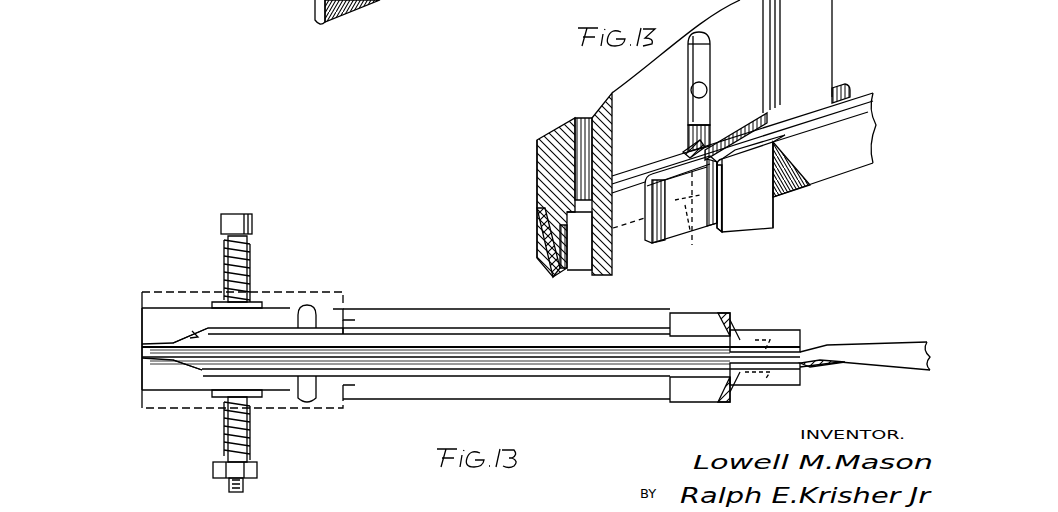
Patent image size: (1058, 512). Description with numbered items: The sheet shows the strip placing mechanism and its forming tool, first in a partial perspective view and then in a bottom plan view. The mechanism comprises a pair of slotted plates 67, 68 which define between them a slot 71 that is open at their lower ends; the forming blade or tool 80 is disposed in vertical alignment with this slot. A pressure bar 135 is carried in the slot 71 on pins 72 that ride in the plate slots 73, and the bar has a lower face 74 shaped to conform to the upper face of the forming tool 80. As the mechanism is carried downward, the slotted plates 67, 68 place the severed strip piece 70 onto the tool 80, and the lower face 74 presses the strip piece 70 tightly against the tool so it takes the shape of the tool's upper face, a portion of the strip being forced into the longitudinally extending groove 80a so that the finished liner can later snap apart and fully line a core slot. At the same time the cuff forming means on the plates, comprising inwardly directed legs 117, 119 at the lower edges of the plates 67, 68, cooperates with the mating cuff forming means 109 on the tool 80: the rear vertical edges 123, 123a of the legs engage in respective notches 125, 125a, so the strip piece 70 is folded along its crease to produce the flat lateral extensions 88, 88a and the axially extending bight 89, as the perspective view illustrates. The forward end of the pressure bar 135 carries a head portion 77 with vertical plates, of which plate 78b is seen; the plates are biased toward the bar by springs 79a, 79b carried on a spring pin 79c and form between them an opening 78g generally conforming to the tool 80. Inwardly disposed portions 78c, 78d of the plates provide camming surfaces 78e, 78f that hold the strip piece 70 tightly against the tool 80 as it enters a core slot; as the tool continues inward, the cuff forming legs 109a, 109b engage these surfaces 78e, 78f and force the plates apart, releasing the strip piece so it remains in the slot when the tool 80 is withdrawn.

In FIG. 13, the slotted plate 67 is at (538, 392).
In FIG. 12, the slotted plate 68 is at (602, 116).
In FIG. 13, the slotted plate 68 is at (507, 313).
In FIG. 12, the strip piece 70 is at (538, 240).
In FIG. 13, the slot 71 is at (445, 331).
In FIG. 12, the pins 72 is at (704, 93).
In FIG. 13, the pins 72 is at (307, 400).
In FIG. 12, the plate slots 73 is at (705, 50).
In FIG. 13, the lower face 74 is at (266, 347).
In FIG. 13, the head portion 77 is at (133, 298).
In FIG. 13, the vertical plate 78b is at (155, 318).
In FIG. 13, the inwardly disposed portion 78c is at (141, 328).
In FIG. 13, the inwardly disposed portion 78d is at (142, 372).
In FIG. 13, the camming surface 78e is at (195, 333).
In FIG. 13, the camming surface 78f is at (206, 375).
In FIG. 13, the opening 78g is at (142, 357).
In FIG. 13, the spring 79a is at (252, 264).
In FIG. 13, the spring 79b is at (246, 448).
In FIG. 13, the spring pin 79c is at (253, 223).
In FIG. 12, the forming tool 80 is at (842, 158).
In FIG. 13, the forming tool 80 is at (558, 350).
In FIG. 12, the longitudinally extending groove 80a is at (850, 90).
In FIG. 12, the lateral extension 88 is at (712, 228).
In FIG. 12, the lateral extension 88a is at (686, 220).
In FIG. 12, the bight 89 is at (703, 137).
In FIG. 12, the cuff forming means 109 is at (785, 201).
In FIG. 13, the cuff forming means 109 is at (800, 390).
In FIG. 12, the cuff forming leg 109a is at (755, 207).
In FIG. 13, the cuff forming leg 109a is at (800, 342).
In FIG. 13, the cuff forming leg 109b is at (805, 372).
In FIG. 13, the inwardly directed leg 117 is at (694, 320).
In FIG. 13, the inwardly directed leg 119 is at (692, 393).
In FIG. 13, the rear vertical edge 123 is at (737, 335).
In FIG. 13, the rear vertical edge 123a is at (735, 392).
In FIG. 13, the notch 125 is at (793, 338).
In FIG. 13, the notch 125a is at (755, 385).
In FIG. 12, the pressure bar 135 is at (550, 177).
In FIG. 13, the pressure bar 135 is at (142, 346).